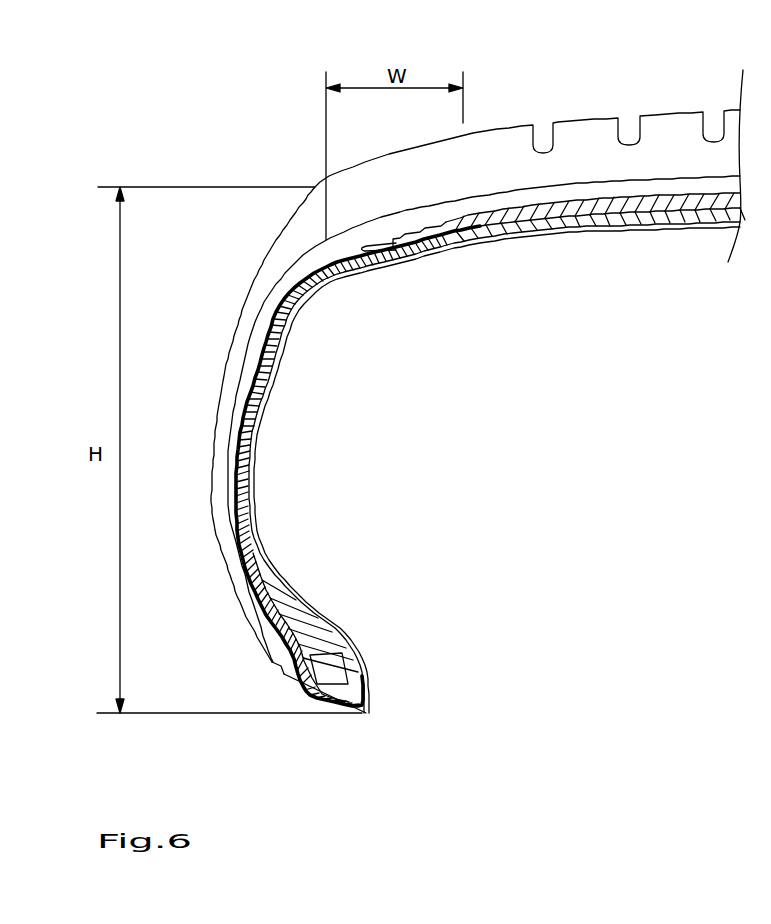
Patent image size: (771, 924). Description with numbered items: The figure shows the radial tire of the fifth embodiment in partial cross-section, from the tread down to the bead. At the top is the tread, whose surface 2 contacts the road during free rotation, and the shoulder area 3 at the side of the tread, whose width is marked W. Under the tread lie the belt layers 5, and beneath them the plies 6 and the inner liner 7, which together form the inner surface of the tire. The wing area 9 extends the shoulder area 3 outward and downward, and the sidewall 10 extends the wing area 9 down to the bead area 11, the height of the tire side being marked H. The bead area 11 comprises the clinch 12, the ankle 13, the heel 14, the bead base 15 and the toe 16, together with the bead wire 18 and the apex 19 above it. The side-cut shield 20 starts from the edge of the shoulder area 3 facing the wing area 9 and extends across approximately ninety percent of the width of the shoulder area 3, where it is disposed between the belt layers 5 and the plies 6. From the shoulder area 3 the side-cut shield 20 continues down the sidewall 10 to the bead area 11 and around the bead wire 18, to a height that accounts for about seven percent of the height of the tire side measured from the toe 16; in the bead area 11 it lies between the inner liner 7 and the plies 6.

The surface 2 is at (677, 128).
The shoulder area 3 is at (353, 180).
The belt layers 5 is at (610, 203).
The plies 6 is at (247, 413).
The inner liner 7 is at (477, 246).
The wing area 9 is at (297, 235).
The sidewall 10 is at (224, 466).
The bead area 11 is at (219, 571).
The clinch 12 is at (244, 612).
The ankle 13 is at (283, 676).
The heel 14 is at (301, 696).
The bead base 15 is at (337, 704).
The toe 16 is at (366, 713).
The bead wire 18 is at (333, 672).
The apex 19 is at (298, 628).
The side-cut shield 20 is at (243, 512).